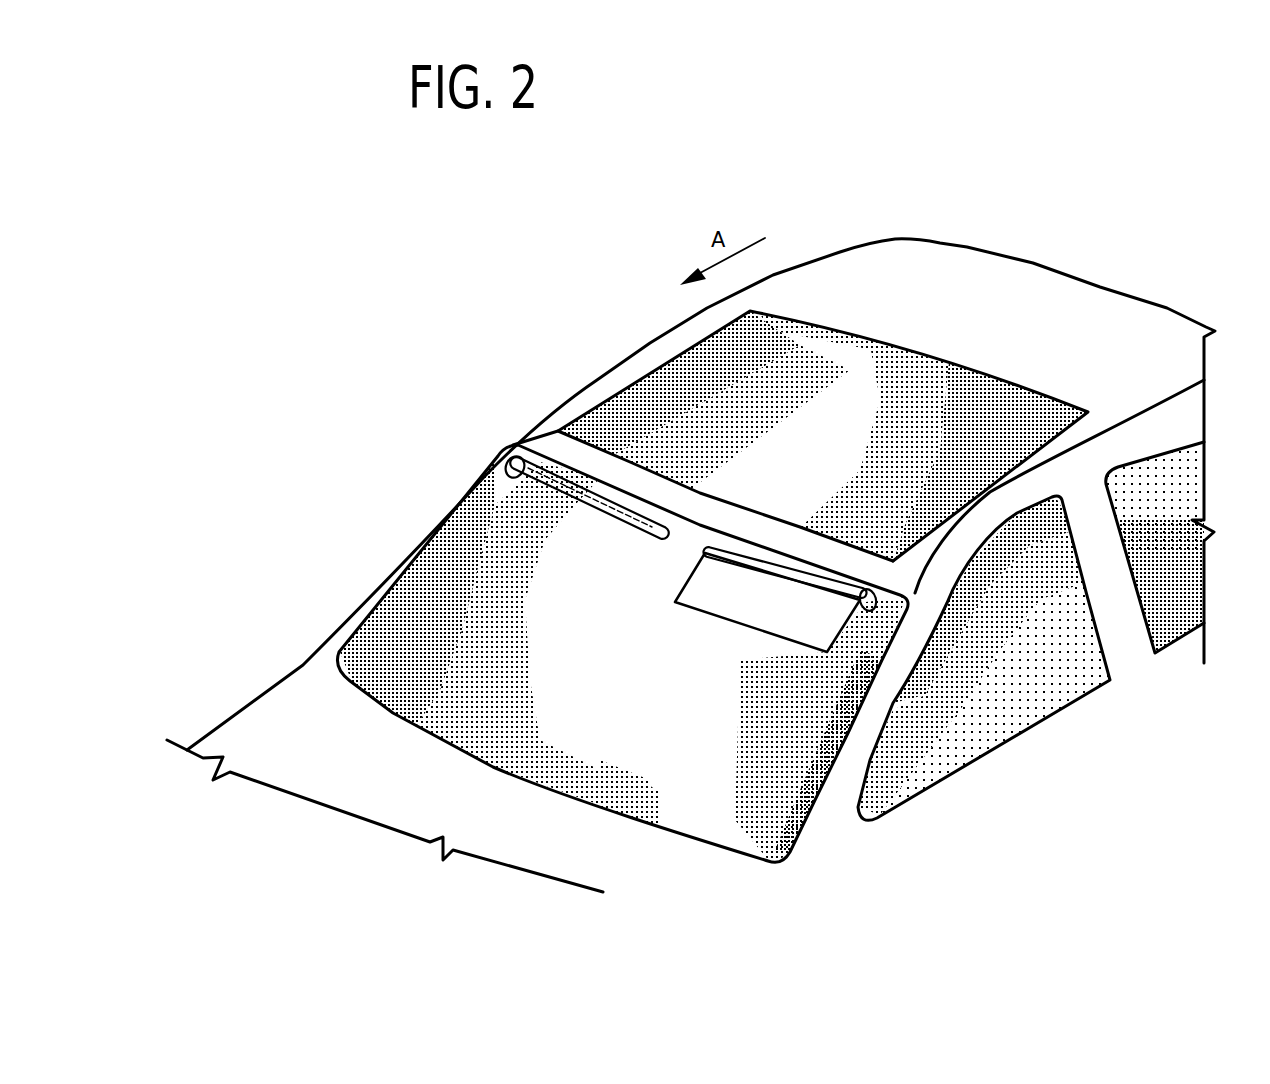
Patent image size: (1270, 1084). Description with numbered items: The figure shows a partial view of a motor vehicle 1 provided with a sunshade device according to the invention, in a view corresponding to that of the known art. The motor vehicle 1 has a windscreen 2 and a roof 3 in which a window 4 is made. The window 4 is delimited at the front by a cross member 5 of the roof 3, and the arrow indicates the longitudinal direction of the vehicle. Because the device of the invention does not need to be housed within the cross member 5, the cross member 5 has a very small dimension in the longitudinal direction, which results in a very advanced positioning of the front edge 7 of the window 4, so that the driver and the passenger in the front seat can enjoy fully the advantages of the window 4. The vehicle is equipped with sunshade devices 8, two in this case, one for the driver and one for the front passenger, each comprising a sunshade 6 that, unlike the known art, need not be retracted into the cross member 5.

The motor vehicle 1 is at (397, 418).
The windscreen 2 is at (760, 822).
The roof 3 is at (1113, 303).
The window 4 is at (851, 342).
The cross member 5 is at (563, 453).
The sunshade 6 is at (724, 596).
The front edge 7 is at (632, 460).
The sunshade device 8 is at (686, 548).